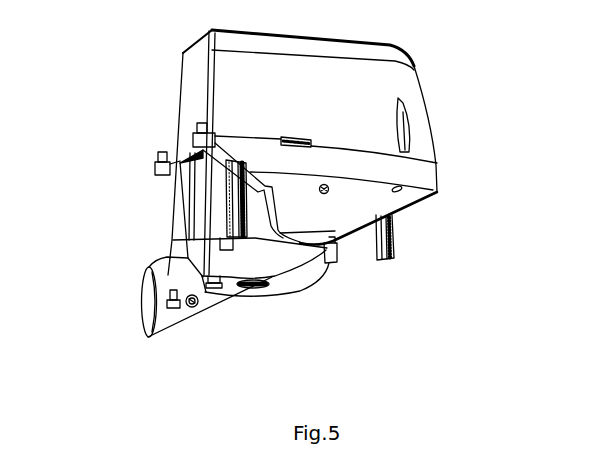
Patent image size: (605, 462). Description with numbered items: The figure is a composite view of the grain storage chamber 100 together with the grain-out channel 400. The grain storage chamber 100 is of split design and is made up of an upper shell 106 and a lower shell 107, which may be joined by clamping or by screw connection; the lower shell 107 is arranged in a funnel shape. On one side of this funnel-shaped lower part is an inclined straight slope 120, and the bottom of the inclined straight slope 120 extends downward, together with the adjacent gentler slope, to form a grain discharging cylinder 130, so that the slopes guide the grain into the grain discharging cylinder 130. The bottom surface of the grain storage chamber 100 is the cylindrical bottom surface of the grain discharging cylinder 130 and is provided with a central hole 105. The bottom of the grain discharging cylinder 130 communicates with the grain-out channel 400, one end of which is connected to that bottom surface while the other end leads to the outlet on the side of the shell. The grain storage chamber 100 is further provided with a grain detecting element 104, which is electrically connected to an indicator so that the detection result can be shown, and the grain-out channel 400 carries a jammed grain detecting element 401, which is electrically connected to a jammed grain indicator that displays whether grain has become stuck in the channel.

The grain storage chamber 100 is at (383, 80).
The grain detecting element 104 is at (325, 195).
The central hole 105 is at (253, 290).
The upper shell 106 is at (237, 80).
The lower shell 107 is at (385, 230).
The inclined straight slope 120 is at (424, 202).
The grain discharging cylinder 130 is at (187, 208).
The grain-out channel 400 is at (141, 290).
The jammed grain detecting element 401 is at (195, 308).